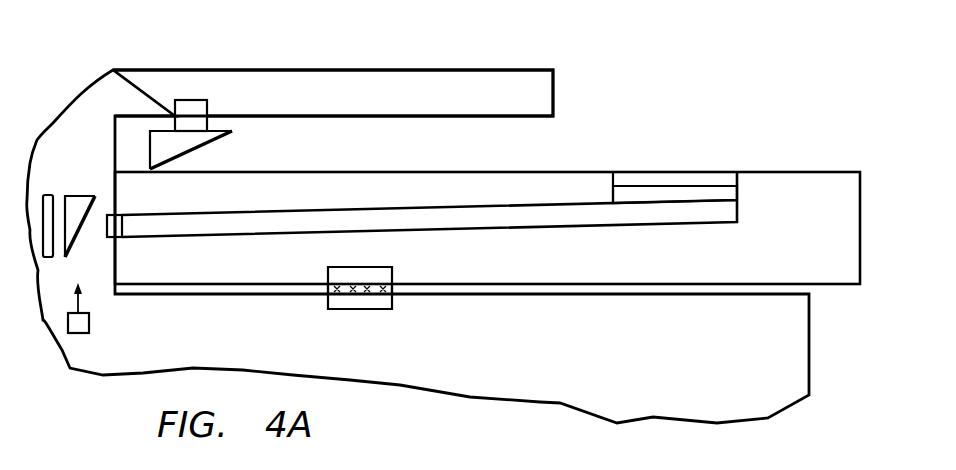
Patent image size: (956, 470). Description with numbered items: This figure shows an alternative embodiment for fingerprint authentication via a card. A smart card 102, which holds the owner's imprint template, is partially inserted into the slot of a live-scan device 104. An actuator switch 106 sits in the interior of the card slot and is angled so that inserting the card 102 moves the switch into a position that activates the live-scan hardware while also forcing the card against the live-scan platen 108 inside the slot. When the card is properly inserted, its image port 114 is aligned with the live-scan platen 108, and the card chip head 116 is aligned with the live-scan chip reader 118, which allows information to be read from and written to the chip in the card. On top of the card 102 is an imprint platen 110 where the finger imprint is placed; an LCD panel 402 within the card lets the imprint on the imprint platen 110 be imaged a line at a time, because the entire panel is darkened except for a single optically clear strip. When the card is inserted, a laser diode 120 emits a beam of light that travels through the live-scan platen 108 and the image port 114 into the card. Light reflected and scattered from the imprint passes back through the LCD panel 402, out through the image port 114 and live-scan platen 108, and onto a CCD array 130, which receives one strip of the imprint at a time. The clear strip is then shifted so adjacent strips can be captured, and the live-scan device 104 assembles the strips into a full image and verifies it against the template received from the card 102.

The card 102 is at (823, 172).
The live-scan device 104 is at (348, 70).
The actuator switch 106 is at (176, 104).
The live-scan platen 108 is at (108, 238).
The imprint platen 110 is at (715, 178).
The image port 114 is at (118, 217).
The card chip head 116 is at (328, 272).
The live-scan chip reader 118 is at (328, 300).
The laser diode 120 is at (89, 322).
The CCD array 130 is at (49, 195).
The LCD panel 402 is at (733, 195).